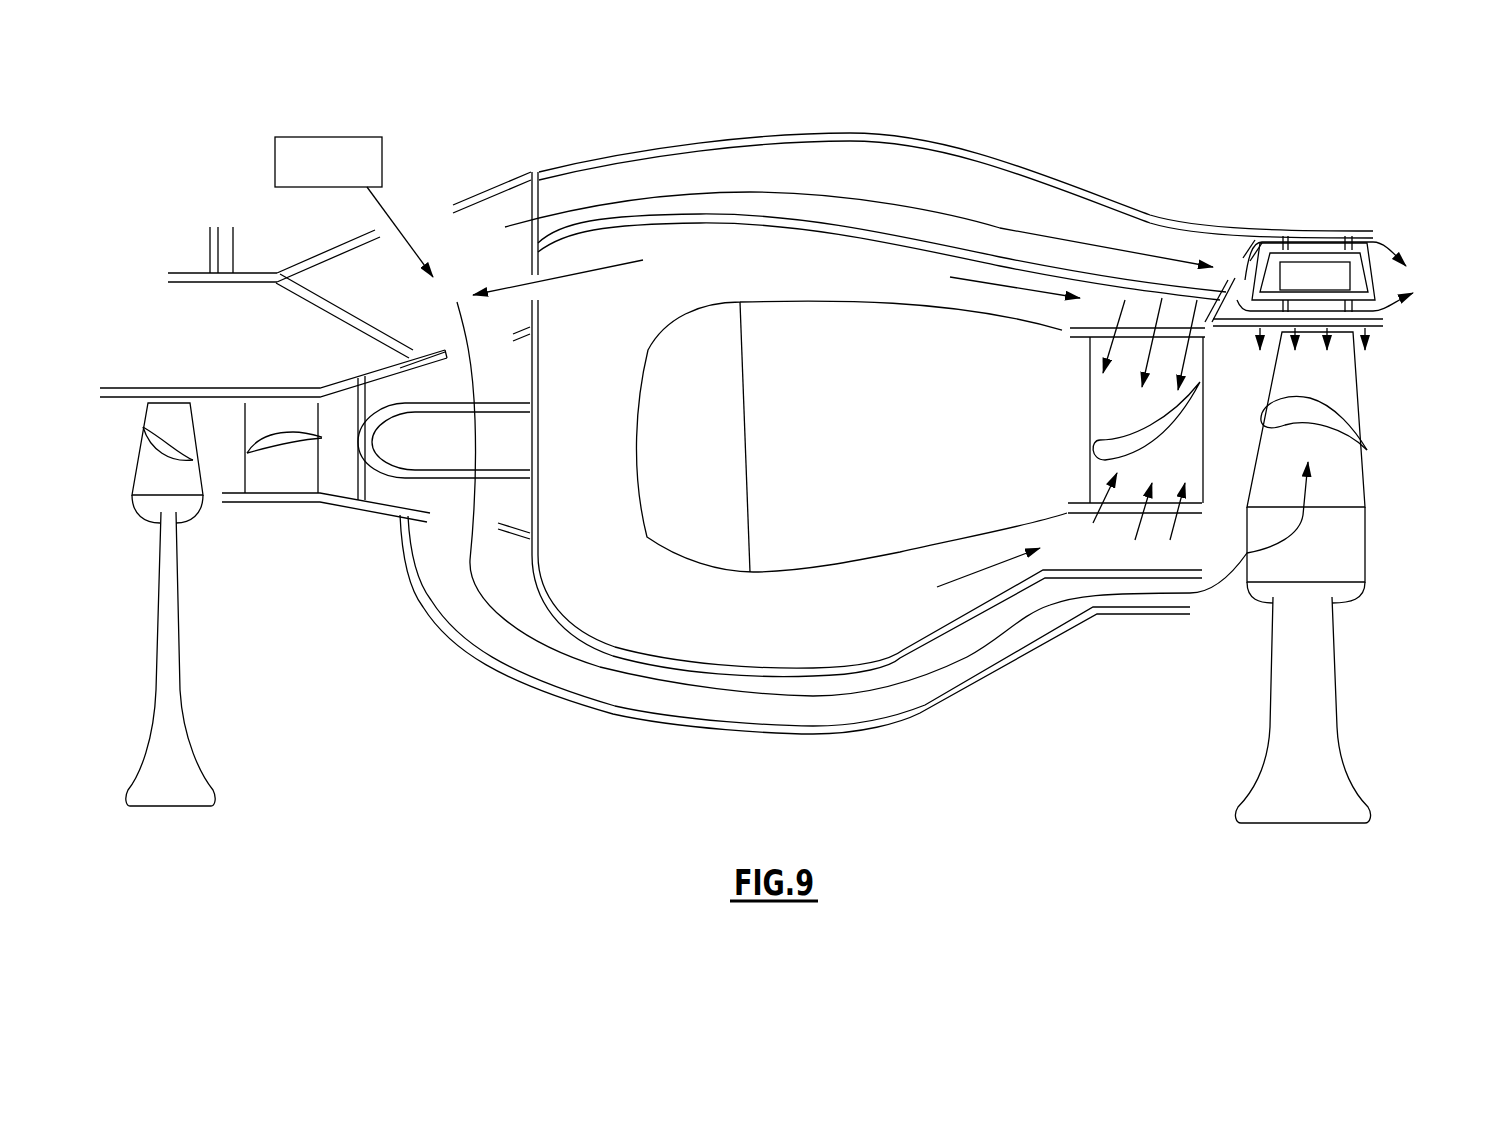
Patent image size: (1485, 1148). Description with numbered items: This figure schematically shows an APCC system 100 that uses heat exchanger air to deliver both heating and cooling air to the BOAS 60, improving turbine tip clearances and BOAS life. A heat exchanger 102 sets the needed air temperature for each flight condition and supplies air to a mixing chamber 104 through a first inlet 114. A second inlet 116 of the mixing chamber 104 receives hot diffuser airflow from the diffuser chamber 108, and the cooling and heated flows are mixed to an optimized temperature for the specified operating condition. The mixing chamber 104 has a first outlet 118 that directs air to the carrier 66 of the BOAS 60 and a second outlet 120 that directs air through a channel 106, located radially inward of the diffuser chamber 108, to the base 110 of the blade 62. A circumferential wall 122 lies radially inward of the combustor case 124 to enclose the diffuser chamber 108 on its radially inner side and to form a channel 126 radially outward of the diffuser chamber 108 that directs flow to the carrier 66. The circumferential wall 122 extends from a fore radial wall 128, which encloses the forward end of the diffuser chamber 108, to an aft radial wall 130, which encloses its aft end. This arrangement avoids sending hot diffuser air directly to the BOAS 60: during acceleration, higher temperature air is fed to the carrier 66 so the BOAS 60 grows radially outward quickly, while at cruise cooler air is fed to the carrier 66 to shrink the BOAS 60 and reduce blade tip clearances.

The APCC system 100 is at (783, 458).
The heat exchanger 102 is at (383, 146).
The mixing chamber 104 is at (463, 240).
The channel 106 is at (597, 697).
The diffuser chamber 108 is at (588, 571).
The base 110 is at (1338, 550).
The first inlet 114 is at (453, 207).
The second inlet 116 is at (538, 301).
The first outlet 118 is at (540, 193).
The second outlet 120 is at (445, 362).
The circumferential wall 122 is at (820, 230).
The combustor case 124 is at (910, 150).
The channel 126 is at (970, 193).
The fore radial wall 128 is at (538, 367).
The aft radial wall 130 is at (1208, 323).
The BOAS 60 is at (1409, 252).
The blade 62 is at (1343, 388).
The carrier 66 is at (1262, 280).